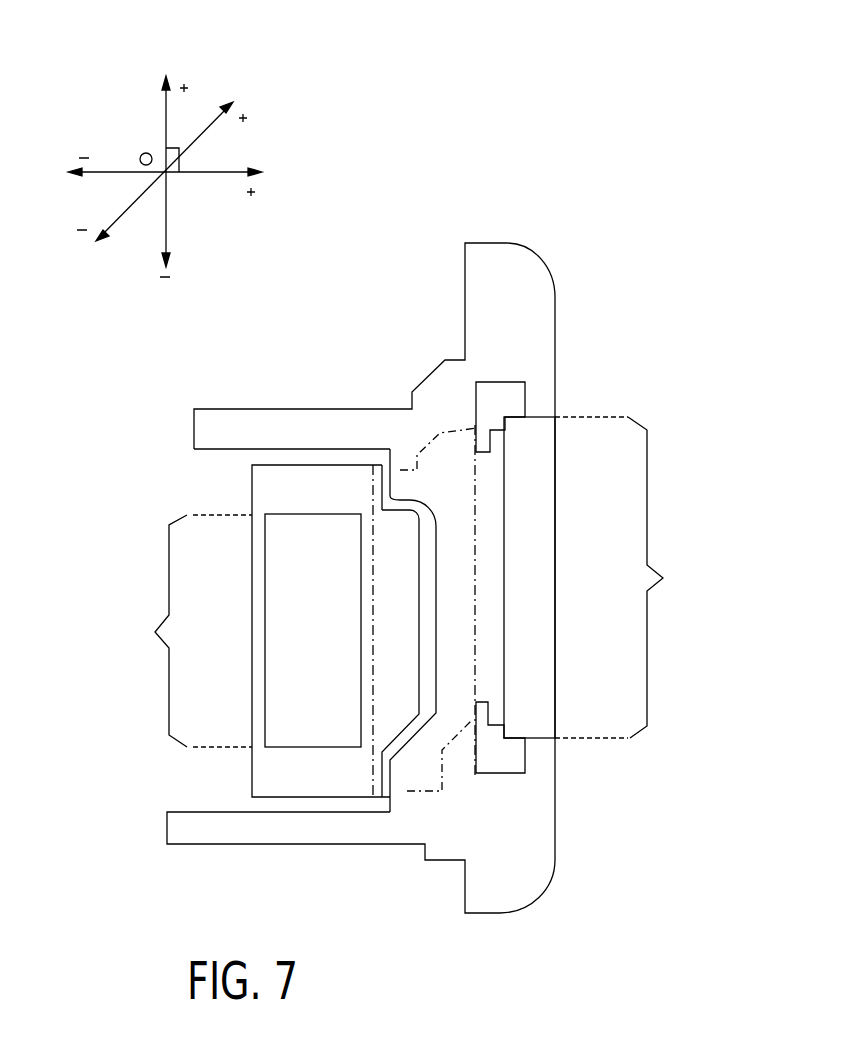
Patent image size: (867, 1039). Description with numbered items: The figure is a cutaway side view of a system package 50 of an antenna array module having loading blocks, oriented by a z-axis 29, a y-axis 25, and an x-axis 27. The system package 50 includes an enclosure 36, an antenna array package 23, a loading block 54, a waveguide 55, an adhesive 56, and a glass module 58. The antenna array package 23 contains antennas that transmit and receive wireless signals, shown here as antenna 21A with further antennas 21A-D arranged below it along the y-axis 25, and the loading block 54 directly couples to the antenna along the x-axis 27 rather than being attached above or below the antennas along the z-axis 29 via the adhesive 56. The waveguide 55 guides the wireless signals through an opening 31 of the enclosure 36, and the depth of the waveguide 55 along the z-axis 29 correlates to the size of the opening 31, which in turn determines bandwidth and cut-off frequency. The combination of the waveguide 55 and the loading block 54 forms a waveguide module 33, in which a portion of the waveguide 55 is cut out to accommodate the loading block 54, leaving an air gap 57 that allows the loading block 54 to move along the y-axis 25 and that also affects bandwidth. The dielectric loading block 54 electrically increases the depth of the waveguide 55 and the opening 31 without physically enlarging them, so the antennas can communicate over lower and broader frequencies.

The z-axis 29 is at (168, 40).
The y-axis 25 is at (312, 155).
The x-axis 27 is at (93, 283).
The system package 50 is at (567, 269).
The enclosure 36 is at (525, 846).
The waveguide module 33 is at (373, 493).
The waveguide 55 is at (435, 462).
The antenna array package 23 is at (287, 497).
The antenna 21A is at (335, 690).
The antennas 21A-D is at (166, 631).
The loading block 54 is at (388, 636).
The air gap 57 is at (427, 623).
The adhesive 56 is at (488, 512).
The glass module 58 is at (525, 592).
The opening 31 is at (626, 577).